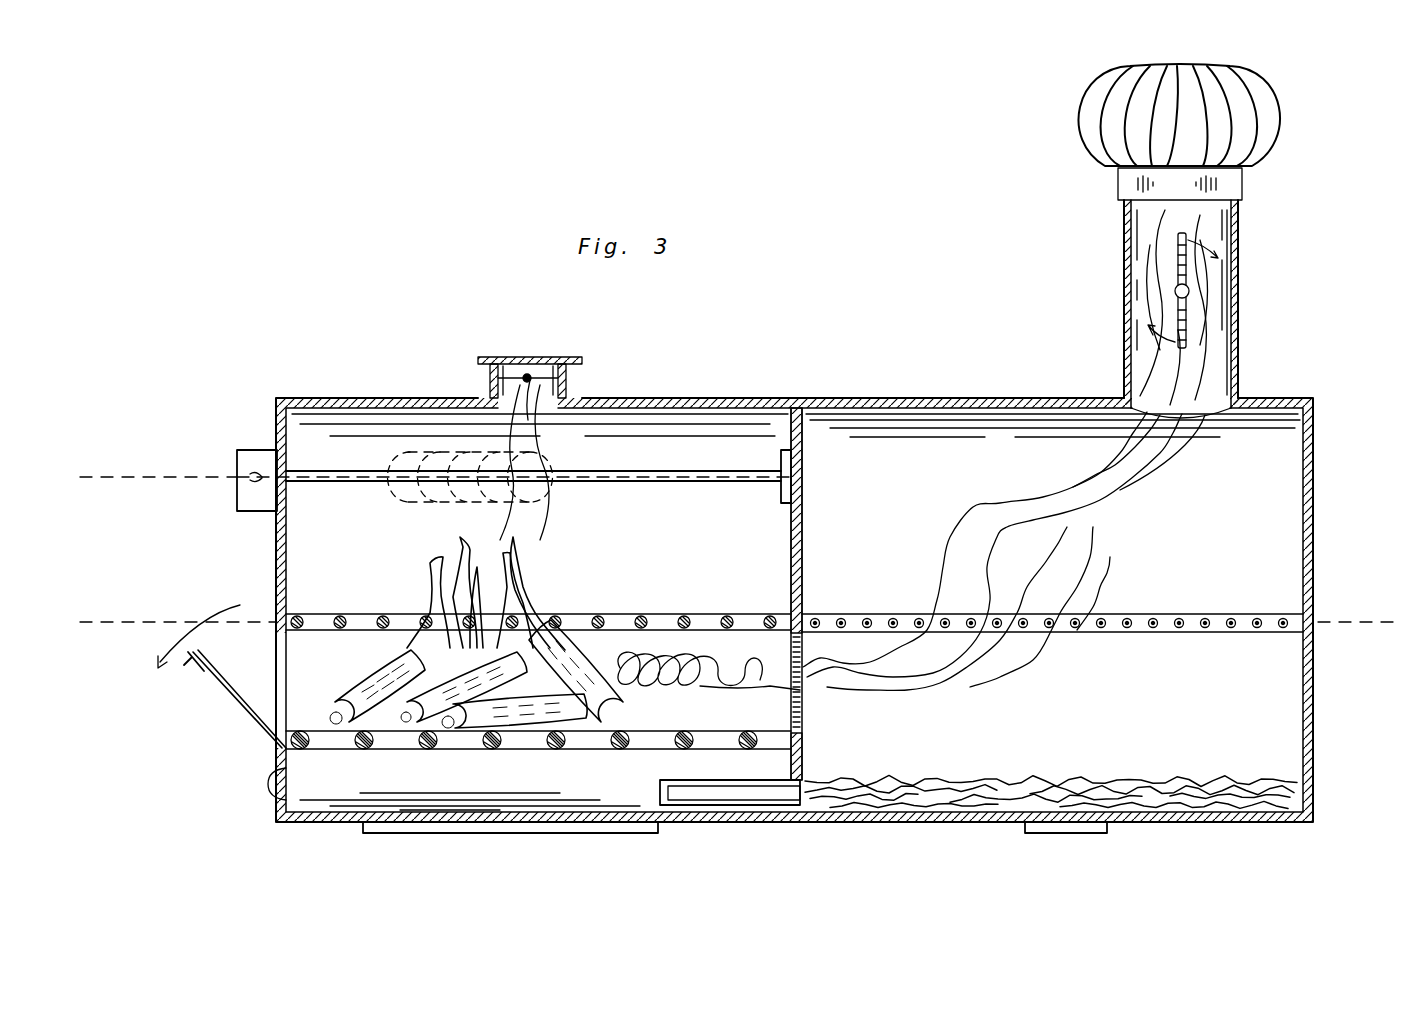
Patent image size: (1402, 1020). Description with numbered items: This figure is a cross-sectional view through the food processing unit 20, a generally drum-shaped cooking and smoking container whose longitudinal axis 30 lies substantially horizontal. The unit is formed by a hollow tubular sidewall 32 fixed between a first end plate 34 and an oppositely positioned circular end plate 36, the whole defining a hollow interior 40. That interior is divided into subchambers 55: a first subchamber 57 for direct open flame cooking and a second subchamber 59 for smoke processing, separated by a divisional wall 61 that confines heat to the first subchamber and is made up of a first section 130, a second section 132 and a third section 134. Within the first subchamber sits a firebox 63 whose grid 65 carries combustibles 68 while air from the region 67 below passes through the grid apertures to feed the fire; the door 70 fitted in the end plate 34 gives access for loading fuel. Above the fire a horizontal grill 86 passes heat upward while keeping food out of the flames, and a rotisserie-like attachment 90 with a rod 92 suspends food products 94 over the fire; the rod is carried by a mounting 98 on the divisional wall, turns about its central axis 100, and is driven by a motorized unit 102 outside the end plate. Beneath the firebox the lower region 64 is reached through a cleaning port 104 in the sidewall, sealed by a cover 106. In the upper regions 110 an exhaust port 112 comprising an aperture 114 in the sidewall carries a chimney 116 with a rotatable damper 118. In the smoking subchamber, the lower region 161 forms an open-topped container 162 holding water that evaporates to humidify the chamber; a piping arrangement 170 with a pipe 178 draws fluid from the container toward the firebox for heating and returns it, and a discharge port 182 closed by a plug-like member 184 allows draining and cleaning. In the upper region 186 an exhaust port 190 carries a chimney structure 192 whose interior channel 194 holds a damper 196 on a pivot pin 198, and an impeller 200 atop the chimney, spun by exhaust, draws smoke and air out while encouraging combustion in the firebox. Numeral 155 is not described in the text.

The food processing unit 20 is at (495, 348).
The longitudinal axis 30 is at (120, 622).
The sidewall 32 is at (940, 398).
The first end plate 34 is at (276, 570).
The circular end plate 36 is at (1318, 695).
The hollow interior 40 is at (733, 458).
The subchambers 55 is at (400, 512).
The first subchamber 57 is at (719, 576).
The second subchamber 59 is at (1241, 534).
The divisional wall 61 is at (806, 590).
The firebox 63 is at (680, 708).
The lower region 64 is at (334, 805).
The grid 65 is at (478, 750).
The region below the grid 67 is at (612, 772).
The combustibles 68 is at (350, 688).
The door 70 is at (228, 690).
The grill 86 is at (362, 613).
The rotisserie-like attachment 90 is at (604, 484).
The rod 92 is at (670, 483).
The food products 94 is at (406, 460).
The mounting 98 is at (781, 492).
The central axis 100 is at (120, 478).
The motorized unit 102 is at (240, 493).
The cleaning port 104 is at (660, 825).
The cover 106 is at (500, 825).
The upper regions 110 is at (625, 408).
The exhaust port 112 is at (492, 385).
The aperture 114 is at (540, 420).
The chimney 116 is at (490, 382).
The damper 118 is at (560, 388).
The first section 130 is at (804, 518).
The second section 132 is at (804, 700).
The third section 134 is at (806, 770).
The smoking grate 155 is at (1216, 633).
The lower region 161 is at (1149, 744).
The container 162 is at (988, 780).
The piping arrangement 170 is at (700, 786).
The pipe 178 is at (750, 800).
The discharge port 182 is at (1110, 825).
The plug-like member 184 is at (1066, 833).
The upper region 186 is at (1215, 428).
The exhaust port 190 is at (1243, 398).
The chimney structure 192 is at (1240, 228).
The interior channel 194 is at (1128, 227).
The damper 196 is at (1188, 270).
The pivot pin 198 is at (1190, 294).
The impeller 200 is at (1270, 128).